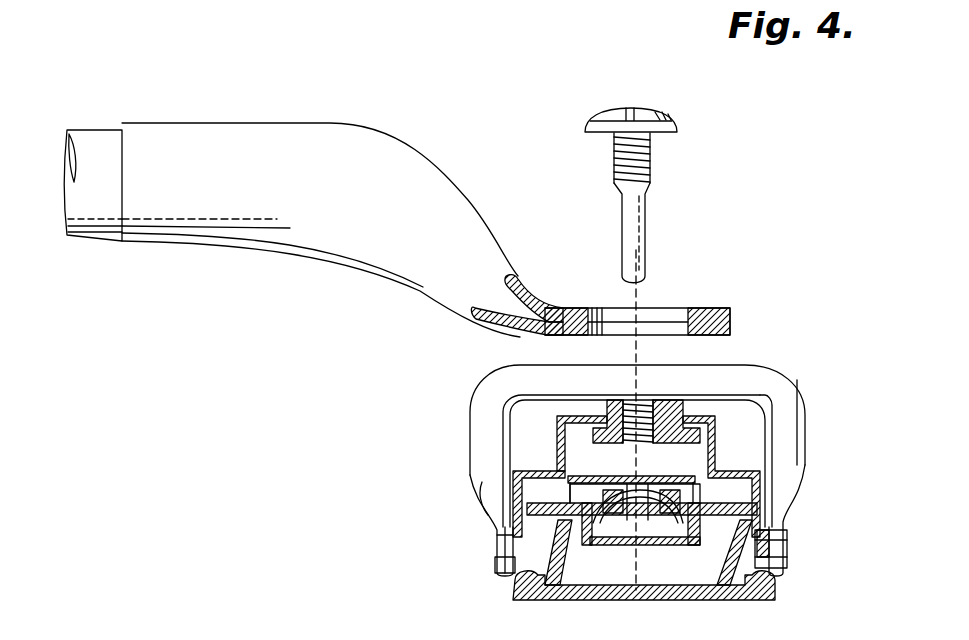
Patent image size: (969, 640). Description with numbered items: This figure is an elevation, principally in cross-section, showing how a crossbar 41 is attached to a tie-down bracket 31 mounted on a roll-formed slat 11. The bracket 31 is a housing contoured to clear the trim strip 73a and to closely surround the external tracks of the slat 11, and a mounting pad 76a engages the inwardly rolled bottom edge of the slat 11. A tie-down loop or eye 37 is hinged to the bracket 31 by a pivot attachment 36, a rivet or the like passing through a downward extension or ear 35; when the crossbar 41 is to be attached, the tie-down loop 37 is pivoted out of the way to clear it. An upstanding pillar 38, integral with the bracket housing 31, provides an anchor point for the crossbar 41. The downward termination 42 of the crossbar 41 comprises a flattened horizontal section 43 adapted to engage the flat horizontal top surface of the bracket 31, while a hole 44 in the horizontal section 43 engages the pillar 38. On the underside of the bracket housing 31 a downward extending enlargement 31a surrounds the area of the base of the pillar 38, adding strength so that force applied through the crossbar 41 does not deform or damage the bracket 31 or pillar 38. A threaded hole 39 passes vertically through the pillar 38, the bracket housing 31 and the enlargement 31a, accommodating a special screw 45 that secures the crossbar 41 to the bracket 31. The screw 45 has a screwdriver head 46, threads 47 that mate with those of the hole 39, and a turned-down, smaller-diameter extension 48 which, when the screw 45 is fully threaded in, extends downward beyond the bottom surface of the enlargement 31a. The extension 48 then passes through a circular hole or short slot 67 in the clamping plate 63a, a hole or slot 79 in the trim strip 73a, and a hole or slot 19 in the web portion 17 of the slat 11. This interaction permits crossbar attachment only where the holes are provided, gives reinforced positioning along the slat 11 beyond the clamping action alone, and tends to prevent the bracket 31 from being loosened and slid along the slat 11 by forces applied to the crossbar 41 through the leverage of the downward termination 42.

The crossbar 41 is at (93, 137).
The downward termination 42 is at (345, 142).
The flattened horizontal section 43 is at (565, 305).
The hole 44 is at (670, 306).
The screw 45 is at (580, 100).
The screwdriver head 46 is at (665, 110).
The threads 47 is at (650, 160).
The turned-down extension 48 is at (640, 236).
The tie-down loop 37 is at (785, 380).
The upstanding pillar 38 is at (698, 396).
The threaded hole 39 is at (622, 395).
The tie-down bracket 31 is at (560, 437).
The downward extending enlargement 31a is at (700, 438).
The clamping plate 63a is at (560, 483).
The hole or short slot 67 is at (632, 478).
The hole or short slot 79 is at (648, 480).
The trim strip 73a is at (700, 495).
The slat 11 is at (593, 548).
The hole or short slot 19 is at (660, 545).
The mounting pad 76a is at (768, 588).
The pivot attachment 36 is at (497, 540).
The downward extension 35 is at (495, 565).
The web portion 17 is at (765, 545).